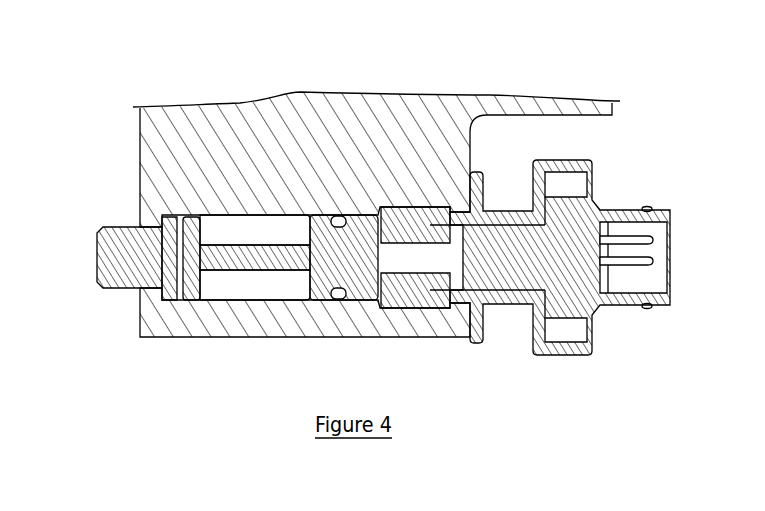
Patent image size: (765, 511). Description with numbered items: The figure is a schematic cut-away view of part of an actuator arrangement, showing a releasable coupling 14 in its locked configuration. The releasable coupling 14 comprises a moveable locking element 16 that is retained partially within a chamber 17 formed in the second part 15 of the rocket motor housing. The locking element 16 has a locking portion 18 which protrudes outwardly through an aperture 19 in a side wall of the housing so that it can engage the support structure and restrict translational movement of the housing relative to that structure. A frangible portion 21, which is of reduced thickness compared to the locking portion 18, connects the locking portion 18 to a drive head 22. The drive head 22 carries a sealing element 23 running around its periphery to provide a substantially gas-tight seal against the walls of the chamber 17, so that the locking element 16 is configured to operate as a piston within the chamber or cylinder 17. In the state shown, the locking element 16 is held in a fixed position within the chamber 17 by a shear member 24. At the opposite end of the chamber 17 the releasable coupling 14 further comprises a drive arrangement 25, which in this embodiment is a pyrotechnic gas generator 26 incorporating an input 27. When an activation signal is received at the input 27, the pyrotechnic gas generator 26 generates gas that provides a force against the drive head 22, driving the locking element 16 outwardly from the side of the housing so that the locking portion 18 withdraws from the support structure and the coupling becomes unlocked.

The releasable coupling 14 is at (666, 90).
The second part of the rocket motor housing 15 is at (191, 120).
The locking element 16 is at (122, 263).
The chamber 17 is at (260, 213).
The locking portion 18 is at (97, 241).
The aperture 19 is at (140, 226).
The frangible portion 21 is at (247, 262).
The drive head 22 is at (359, 288).
The sealing element 23 is at (341, 297).
The shear member 24 is at (162, 300).
The drive arrangement 25 is at (561, 374).
The pyrotechnic gas generator 26 is at (512, 208).
The input 27 is at (653, 240).